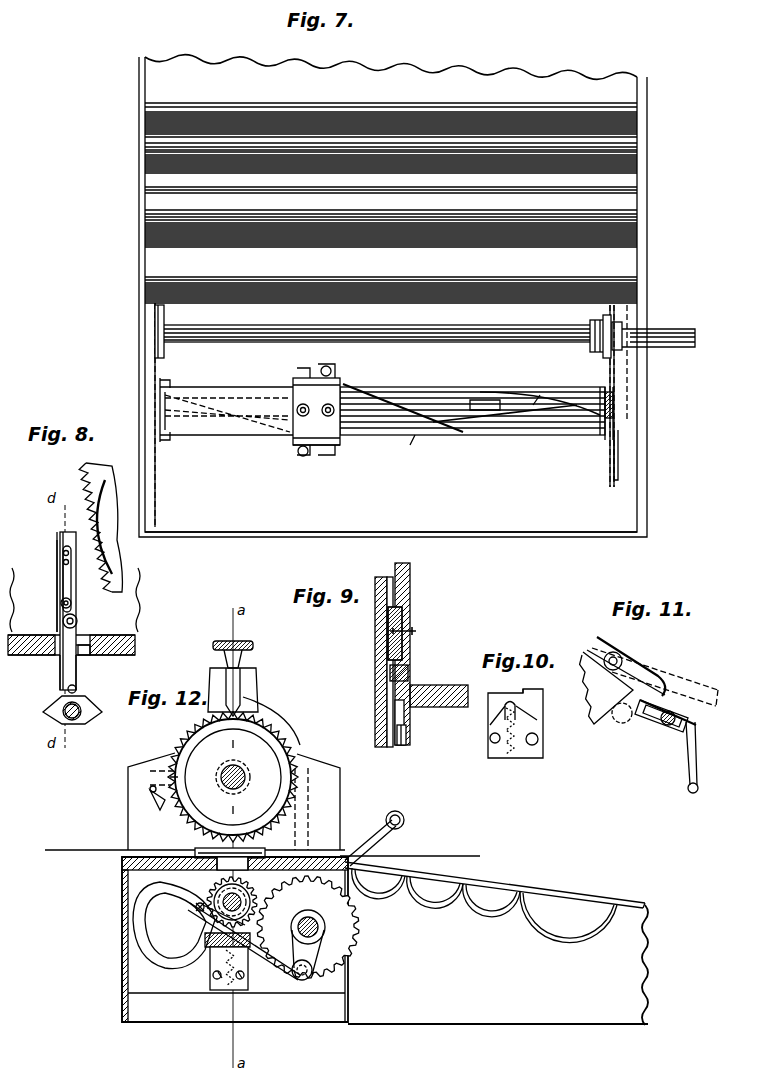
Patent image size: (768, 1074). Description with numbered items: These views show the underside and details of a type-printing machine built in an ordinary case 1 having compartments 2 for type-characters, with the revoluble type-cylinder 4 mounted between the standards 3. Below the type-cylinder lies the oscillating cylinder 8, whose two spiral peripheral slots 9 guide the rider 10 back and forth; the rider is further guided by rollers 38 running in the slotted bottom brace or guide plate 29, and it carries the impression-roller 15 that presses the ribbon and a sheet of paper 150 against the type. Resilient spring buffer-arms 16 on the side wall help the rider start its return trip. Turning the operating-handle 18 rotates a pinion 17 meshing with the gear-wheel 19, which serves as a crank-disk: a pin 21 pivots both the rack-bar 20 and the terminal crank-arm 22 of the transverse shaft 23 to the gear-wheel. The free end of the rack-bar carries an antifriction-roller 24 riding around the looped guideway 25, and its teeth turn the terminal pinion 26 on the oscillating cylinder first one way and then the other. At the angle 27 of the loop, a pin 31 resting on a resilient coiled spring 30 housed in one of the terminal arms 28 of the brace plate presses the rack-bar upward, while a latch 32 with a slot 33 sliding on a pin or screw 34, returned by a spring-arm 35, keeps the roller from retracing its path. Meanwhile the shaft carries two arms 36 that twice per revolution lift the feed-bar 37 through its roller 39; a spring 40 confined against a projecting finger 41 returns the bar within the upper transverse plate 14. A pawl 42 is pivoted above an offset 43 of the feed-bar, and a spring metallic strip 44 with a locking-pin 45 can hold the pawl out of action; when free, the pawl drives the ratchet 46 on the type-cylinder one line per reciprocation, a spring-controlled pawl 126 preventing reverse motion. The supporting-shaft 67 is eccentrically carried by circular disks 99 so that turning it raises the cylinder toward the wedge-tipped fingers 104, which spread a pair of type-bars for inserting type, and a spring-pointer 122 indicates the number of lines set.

In FIG. 7, the case 1 is at (650, 253).
In FIG. 12, the case 1 is at (640, 918).
In FIG. 12, the compartments 2 is at (508, 890).
In FIG. 9, the standards 3 is at (375, 692).
In FIG. 12, the standards 3 is at (337, 768).
In FIG. 12, the type-cylinder 4 is at (270, 752).
In FIG. 7, the oscillating cylinder 8 is at (455, 388).
In FIG. 12, the oscillating cylinder 8 is at (258, 905).
In FIG. 7, the spiral peripheral slots 9 is at (540, 395).
In FIG. 12, the spiral peripheral slots 9 is at (200, 850).
In FIG. 7, the rider 10 is at (293, 440).
In FIG. 7, the upper transverse plate 14 is at (391, 503).
In FIG. 8, the upper transverse plate 14 is at (136, 649).
In FIG. 9, the upper transverse plate 14 is at (455, 686).
In FIG. 12, the upper transverse plate 14 is at (285, 857).
In FIG. 12, the impression-roller 15 is at (232, 863).
In FIG. 7, the resilient spring buffer-arms 16 is at (160, 382).
In FIG. 12, the pinion 17 is at (348, 845).
In FIG. 12, the operating-handle 18 is at (406, 820).
In FIG. 12, the gear-wheel 19 is at (352, 918).
In FIG. 7, the rack-bar 20 is at (628, 399).
In FIG. 12, the rack-bar 20 is at (290, 975).
In FIG. 7, the pin 21 is at (608, 362).
In FIG. 12, the pin 21 is at (301, 980).
In FIG. 12, the terminal crank-arm 22 is at (318, 938).
In FIG. 7, the transverse shaft 23 is at (243, 326).
In FIG. 12, the transverse shaft 23 is at (312, 916).
In FIG. 11, the antifriction-roller 24 is at (624, 652).
In FIG. 12, the antifriction-roller 24 is at (200, 912).
In FIG. 8, the looped guideway 25 is at (64, 716).
In FIG. 11, the looped guideway 25 is at (608, 744).
In FIG. 12, the looped guideway 25 is at (134, 930).
In FIG. 7, the terminal pinion 26 is at (602, 432).
In FIG. 12, the terminal pinion 26 is at (250, 892).
In FIG. 7, the angle of the loop 27 is at (600, 352).
In FIG. 11, the angle of the loop 27 is at (650, 670).
In FIG. 12, the angle of the loop 27 is at (196, 906).
In FIG. 10, the terminal arms 28 is at (532, 758).
In FIG. 12, the terminal arms 28 is at (215, 990).
In FIG. 7, the slotted bottom brace or guide plate 29 is at (228, 390).
In FIG. 10, the slotted bottom brace or guide plate 29 is at (540, 692).
In FIG. 11, the slotted bottom brace or guide plate 29 is at (702, 684).
In FIG. 12, the slotted bottom brace or guide plate 29 is at (222, 948).
In FIG. 10, the resilient coiled spring 30 is at (498, 758).
In FIG. 10, the pin 31 is at (512, 700).
In FIG. 11, the latch 32 is at (655, 728).
In FIG. 12, the latch 32 is at (205, 938).
In FIG. 11, the slot 33 is at (669, 711).
In FIG. 11, the pin or screw 34 is at (688, 716).
In FIG. 11, the spring-arm 35 is at (697, 750).
In FIG. 7, the arms 36 is at (164, 318).
In FIG. 8, the arms 36 is at (48, 708).
In FIG. 8, the feed-bar 37 is at (60, 662).
In FIG. 9, the feed-bar 37 is at (408, 720).
In FIG. 7, the rollers 38 is at (316, 410).
In FIG. 8, the roller 39 is at (77, 688).
In FIG. 9, the roller 39 is at (406, 745).
In FIG. 8, the spring 40 is at (84, 640).
In FIG. 8, the projecting finger 41 is at (90, 655).
In FIG. 8, the pawl 42 is at (62, 536).
In FIG. 9, the pawl 42 is at (408, 580).
In FIG. 8, the offset 43 is at (63, 622).
In FIG. 9, the offset 43 is at (408, 674).
In FIG. 8, the spring metallic strip 44 is at (63, 586).
In FIG. 9, the spring metallic strip 44 is at (410, 612).
In FIG. 8, the locking-pin 45 is at (70, 603).
In FIG. 9, the locking-pin 45 is at (416, 631).
In FIG. 8, the ratchet 46 is at (88, 470).
In FIG. 12, the ratchet 46 is at (190, 742).
In FIG. 12, the supporting-shaft 67 is at (238, 768).
In FIG. 12, the circular disks 99 is at (224, 770).
In FIG. 12, the wedge-tipped fingers 104 is at (255, 678).
In FIG. 12, the spring-pointer 122 is at (283, 725).
In FIG. 12, the spring-controlled pawl 126 is at (157, 808).
In FIG. 12, the sheet of paper 150 is at (440, 850).